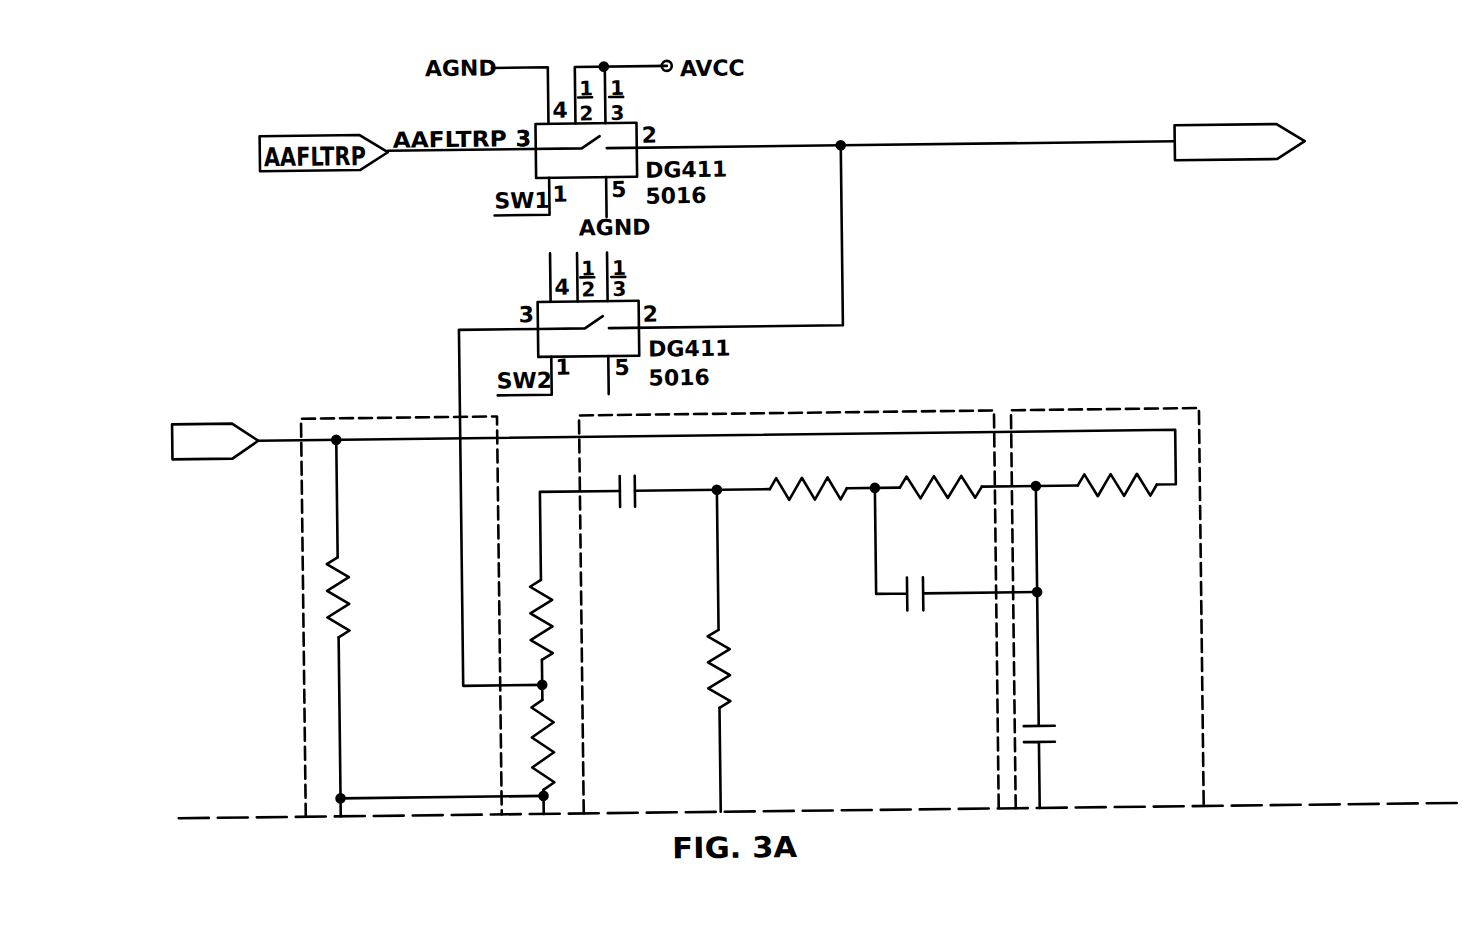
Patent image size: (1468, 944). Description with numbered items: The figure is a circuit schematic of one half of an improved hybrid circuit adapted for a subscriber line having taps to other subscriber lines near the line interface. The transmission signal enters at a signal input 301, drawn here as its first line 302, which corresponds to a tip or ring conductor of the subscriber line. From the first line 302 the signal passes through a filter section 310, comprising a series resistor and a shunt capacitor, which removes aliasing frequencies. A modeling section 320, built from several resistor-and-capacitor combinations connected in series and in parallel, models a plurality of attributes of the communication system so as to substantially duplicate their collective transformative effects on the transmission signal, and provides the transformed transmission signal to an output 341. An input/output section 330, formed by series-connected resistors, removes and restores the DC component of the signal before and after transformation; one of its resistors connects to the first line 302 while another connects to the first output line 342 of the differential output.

The signal input 301 is at (243, 659).
The first line 302 is at (221, 416).
The filter section 310 is at (1201, 536).
The modeling section 320 is at (796, 414).
The input/output section 330 is at (339, 414).
The output 341 is at (1316, 721).
The first output line 342 is at (1232, 168).